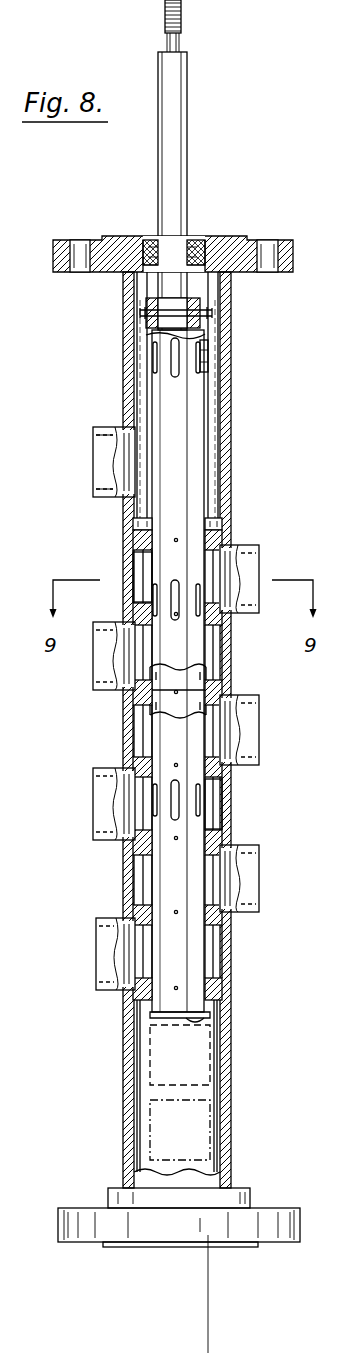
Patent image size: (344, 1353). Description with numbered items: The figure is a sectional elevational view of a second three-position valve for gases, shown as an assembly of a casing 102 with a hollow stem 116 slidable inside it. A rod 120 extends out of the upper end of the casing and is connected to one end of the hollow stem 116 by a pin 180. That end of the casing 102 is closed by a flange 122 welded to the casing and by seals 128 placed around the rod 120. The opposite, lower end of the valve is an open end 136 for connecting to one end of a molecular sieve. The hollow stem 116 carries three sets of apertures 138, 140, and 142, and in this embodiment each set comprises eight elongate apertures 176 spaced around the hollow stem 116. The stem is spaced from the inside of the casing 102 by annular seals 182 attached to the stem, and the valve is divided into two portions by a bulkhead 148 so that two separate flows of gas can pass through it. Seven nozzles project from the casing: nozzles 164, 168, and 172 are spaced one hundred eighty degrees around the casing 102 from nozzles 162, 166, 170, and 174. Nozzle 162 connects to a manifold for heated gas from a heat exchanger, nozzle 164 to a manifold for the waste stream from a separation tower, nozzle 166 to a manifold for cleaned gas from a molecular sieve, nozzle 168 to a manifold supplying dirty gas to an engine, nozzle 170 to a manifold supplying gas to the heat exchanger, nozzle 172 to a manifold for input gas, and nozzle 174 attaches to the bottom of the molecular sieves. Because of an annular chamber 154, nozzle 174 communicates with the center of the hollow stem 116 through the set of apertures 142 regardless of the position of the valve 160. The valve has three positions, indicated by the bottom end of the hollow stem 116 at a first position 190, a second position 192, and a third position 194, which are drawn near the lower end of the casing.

The casing 102 is at (225, 473).
The hollow stem 116 is at (190, 440).
The rod 120 is at (176, 140).
The flange 122 is at (292, 248).
The seals 128 is at (192, 243).
The open end 136 is at (158, 1247).
The set of apertures 138 is at (205, 813).
The set of apertures 140 is at (155, 573).
The set of apertures 142 is at (206, 355).
The bulkhead 148 is at (184, 688).
The annular chamber 154 is at (210, 395).
The valve 160 is at (173, 775).
The nozzle 162 is at (105, 938).
The nozzle 164 is at (253, 870).
The nozzle 166 is at (110, 783).
The nozzle 168 is at (250, 722).
The nozzle 170 is at (100, 672).
The nozzle 172 is at (258, 552).
The nozzle 174 is at (118, 428).
The elongate apertures 176 is at (168, 352).
The pin 180 is at (222, 312).
The annular seals 182 is at (224, 534).
The first position 190 is at (205, 1015).
The second position 192 is at (178, 1082).
The third position 194 is at (182, 1158).